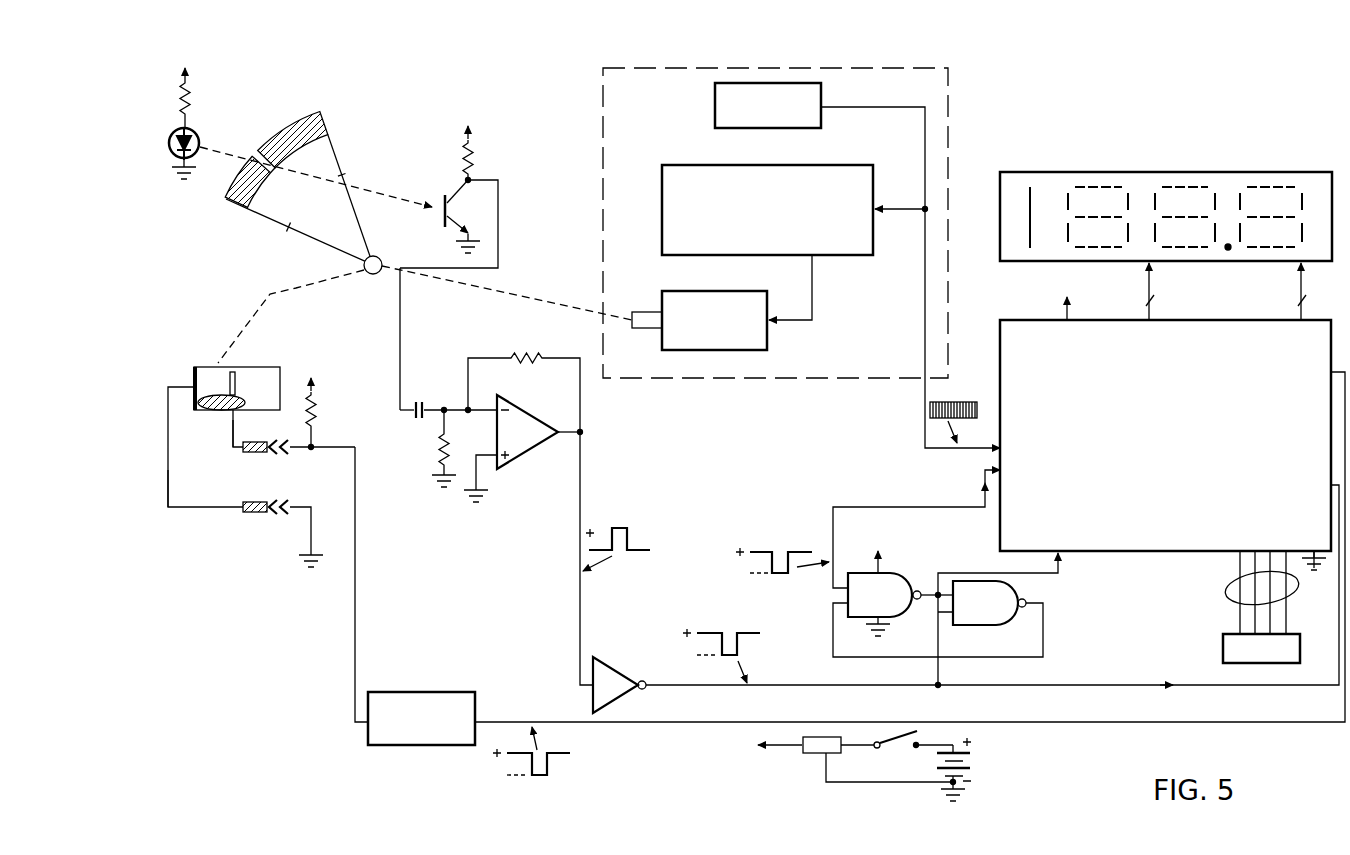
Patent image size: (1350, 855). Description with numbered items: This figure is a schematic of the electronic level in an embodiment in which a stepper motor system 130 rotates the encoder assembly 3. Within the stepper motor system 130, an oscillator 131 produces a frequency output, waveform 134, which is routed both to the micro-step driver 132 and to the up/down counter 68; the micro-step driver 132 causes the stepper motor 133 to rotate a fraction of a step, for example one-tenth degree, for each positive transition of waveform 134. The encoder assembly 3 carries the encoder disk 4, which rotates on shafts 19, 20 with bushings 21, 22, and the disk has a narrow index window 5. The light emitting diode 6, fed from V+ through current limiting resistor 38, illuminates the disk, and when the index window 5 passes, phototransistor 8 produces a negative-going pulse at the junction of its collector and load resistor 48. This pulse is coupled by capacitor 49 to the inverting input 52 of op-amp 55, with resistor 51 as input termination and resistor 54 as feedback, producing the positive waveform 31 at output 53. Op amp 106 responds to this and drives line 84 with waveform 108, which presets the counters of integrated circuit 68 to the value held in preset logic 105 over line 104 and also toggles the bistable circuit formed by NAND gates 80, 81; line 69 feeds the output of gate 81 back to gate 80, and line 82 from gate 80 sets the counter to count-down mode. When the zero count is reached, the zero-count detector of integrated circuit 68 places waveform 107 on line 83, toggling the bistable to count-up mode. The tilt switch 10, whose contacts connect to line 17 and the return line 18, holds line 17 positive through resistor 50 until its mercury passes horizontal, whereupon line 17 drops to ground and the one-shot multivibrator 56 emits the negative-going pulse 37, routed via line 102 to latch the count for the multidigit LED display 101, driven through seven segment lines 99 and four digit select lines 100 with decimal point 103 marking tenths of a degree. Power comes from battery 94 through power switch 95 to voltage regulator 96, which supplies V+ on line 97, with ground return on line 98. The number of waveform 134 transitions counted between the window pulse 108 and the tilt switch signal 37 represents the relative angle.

The encoder assembly 3 is at (267, 222).
The encoder disk 4 is at (323, 112).
The index window 5 is at (277, 171).
The light emitting diode 6 is at (199, 134).
The phototransistor 8 is at (452, 204).
The tilt switch 10 is at (257, 365).
The line 17 is at (236, 455).
The solenoid lead 18 is at (222, 510).
The shaft 19 is at (259, 456).
The shaft 20 is at (259, 516).
The bushing 21 is at (277, 457).
The bushing 22 is at (277, 517).
The positive waveform 31 is at (627, 527).
The negative-going pulse 37 is at (558, 755).
The current limiting resistor 38 is at (191, 87).
The load resistor 48 is at (476, 140).
The capacitor 49 is at (408, 418).
The resistor 50 is at (319, 398).
The resistor 51 is at (437, 448).
The inverting input 52 is at (495, 403).
The output 53 is at (563, 426).
The resistor 54 is at (523, 384).
The operational amplifier 55 is at (529, 442).
The one-shot multivibrator 56 is at (418, 747).
The integrated circuit 68 is at (998, 333).
The line 69 is at (833, 619).
The NAND gate 80 is at (898, 582).
The NAND gate 81 is at (1003, 615).
The line 82 is at (967, 572).
The line 83 is at (898, 505).
The line 84 is at (1061, 682).
The battery 94 is at (965, 762).
The power switch 95 is at (900, 744).
The voltage regulator 96 is at (818, 755).
The line 97 is at (773, 750).
The line 98 is at (297, 572).
The seven segment lines 99 is at (1147, 283).
The digit select lines 100 is at (1300, 283).
The LED display 101 is at (1192, 172).
The line 102 is at (1333, 370).
The decimal point 103 is at (1226, 252).
The line 104 is at (1230, 585).
The preset logic 105 is at (1223, 655).
The op amp 106 is at (608, 678).
The waveform 107 is at (780, 550).
The waveform 108 is at (725, 631).
The stepper motor system 130 is at (950, 108).
The oscillator 131 is at (718, 106).
The micro-step driver 132 is at (845, 256).
The stepper motor 133 is at (768, 339).
The waveform 134 is at (953, 398).